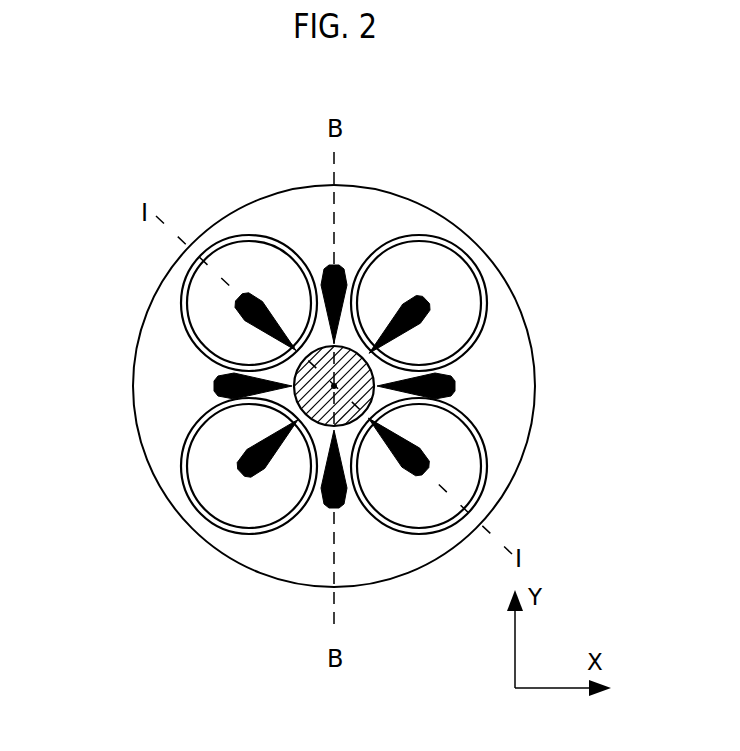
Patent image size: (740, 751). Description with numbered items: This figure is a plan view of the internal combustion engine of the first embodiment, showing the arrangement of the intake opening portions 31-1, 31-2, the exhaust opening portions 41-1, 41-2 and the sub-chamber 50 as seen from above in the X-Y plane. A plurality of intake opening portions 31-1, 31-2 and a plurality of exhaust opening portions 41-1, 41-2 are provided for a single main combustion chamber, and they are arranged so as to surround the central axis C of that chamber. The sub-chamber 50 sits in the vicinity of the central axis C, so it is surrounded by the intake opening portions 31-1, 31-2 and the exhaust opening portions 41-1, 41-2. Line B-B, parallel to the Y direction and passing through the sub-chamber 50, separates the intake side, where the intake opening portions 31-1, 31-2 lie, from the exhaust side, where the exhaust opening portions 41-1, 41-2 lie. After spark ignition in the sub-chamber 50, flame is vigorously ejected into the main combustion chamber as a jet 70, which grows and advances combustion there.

The intake opening portion 31-1 is at (235, 238).
The intake opening portion 31-2 is at (243, 537).
The exhaust opening portion 41-1 is at (435, 238).
The exhaust opening portion 41-2 is at (413, 535).
The sub-chamber 50 is at (315, 368).
The jet 70 is at (460, 388).